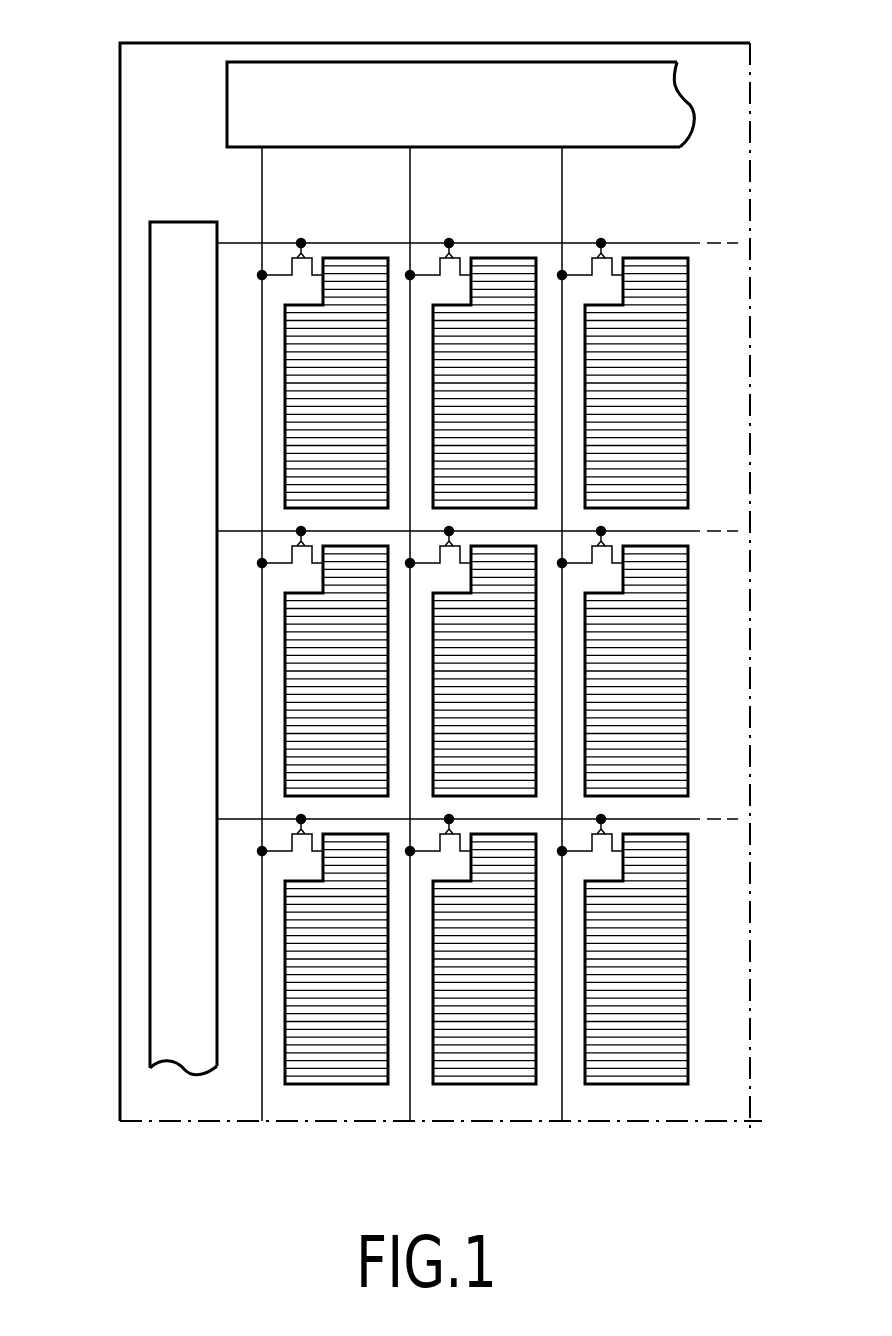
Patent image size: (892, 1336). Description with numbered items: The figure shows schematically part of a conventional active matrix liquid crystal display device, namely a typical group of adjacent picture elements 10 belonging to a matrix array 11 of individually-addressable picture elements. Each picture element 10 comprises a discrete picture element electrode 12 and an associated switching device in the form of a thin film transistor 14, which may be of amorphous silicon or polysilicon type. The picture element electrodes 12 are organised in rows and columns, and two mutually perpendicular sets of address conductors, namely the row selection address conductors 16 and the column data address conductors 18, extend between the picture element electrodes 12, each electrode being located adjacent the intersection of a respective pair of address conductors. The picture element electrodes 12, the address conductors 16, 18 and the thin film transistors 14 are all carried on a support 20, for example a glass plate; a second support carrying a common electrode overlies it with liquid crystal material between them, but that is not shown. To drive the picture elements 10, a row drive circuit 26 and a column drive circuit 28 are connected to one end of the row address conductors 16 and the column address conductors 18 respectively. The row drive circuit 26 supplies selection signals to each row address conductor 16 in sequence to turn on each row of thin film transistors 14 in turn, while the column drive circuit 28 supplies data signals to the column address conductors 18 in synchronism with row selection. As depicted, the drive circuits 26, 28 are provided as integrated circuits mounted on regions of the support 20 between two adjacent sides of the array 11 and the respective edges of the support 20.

The picture element 10 is at (534, 637).
The matrix array 11 is at (486, 1089).
The picture element electrode 12 is at (675, 393).
The thin film transistor 14 is at (306, 258).
The row address conductor 16 is at (662, 244).
The column address conductor 18 is at (262, 157).
The support 20 is at (750, 1052).
The row drive circuit 26 is at (173, 577).
The column drive circuit 28 is at (607, 78).